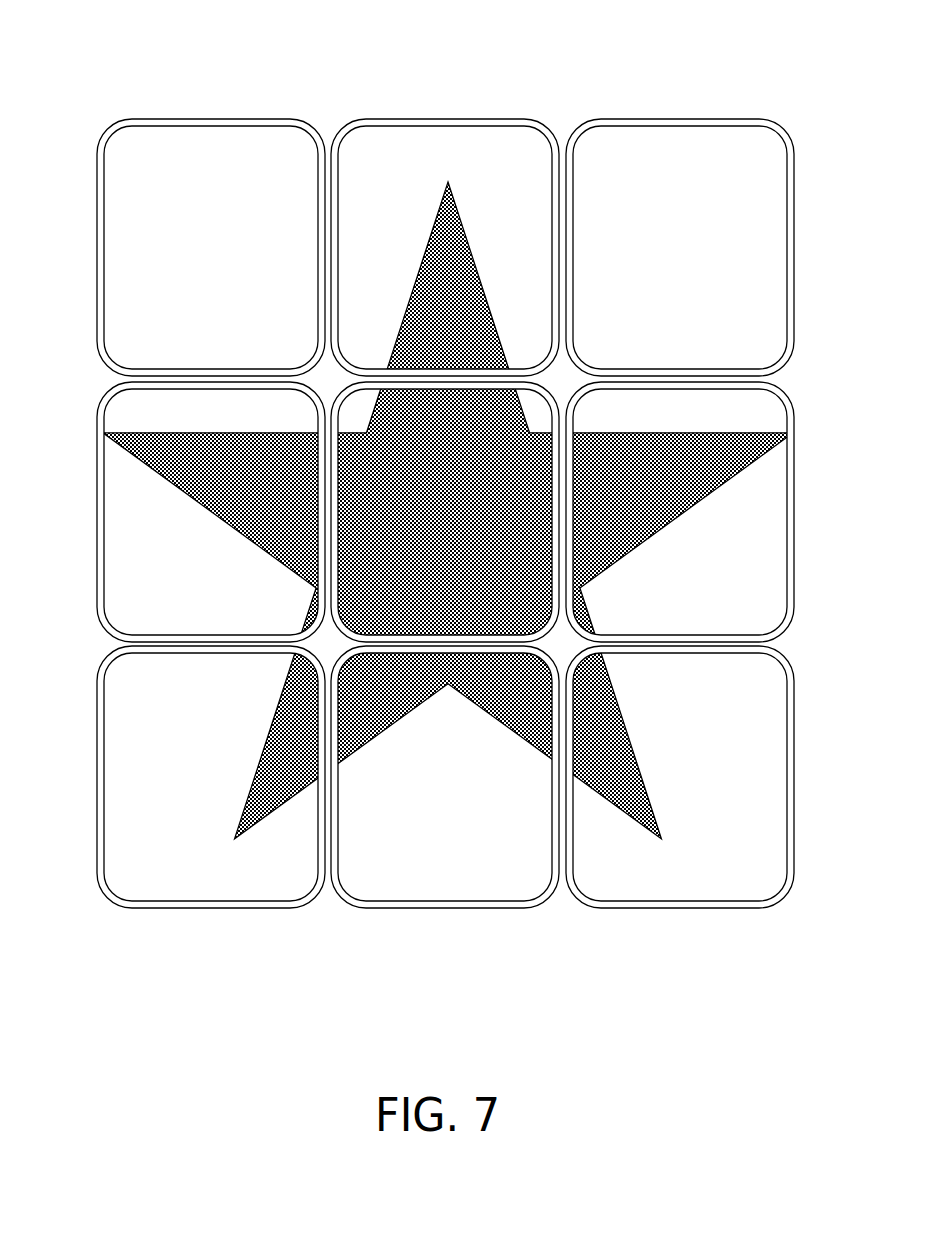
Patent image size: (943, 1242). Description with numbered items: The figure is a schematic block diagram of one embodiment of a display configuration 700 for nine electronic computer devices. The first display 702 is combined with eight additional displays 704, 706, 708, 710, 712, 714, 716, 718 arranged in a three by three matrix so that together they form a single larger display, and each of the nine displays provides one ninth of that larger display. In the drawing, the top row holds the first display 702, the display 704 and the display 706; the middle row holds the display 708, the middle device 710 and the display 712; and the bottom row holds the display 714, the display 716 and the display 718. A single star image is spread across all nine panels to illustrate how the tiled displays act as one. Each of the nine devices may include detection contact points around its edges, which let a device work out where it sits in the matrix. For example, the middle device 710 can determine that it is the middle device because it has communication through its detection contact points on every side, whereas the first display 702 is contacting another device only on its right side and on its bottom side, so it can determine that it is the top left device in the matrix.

The display configuration 700 is at (114, 66).
The first display 702 is at (215, 180).
The additional display 704 is at (510, 185).
The additional display 706 is at (722, 185).
The additional display 708 is at (143, 627).
The middle device 710 is at (443, 622).
The additional display 712 is at (653, 620).
The additional display 714 is at (143, 862).
The additional display 716 is at (442, 862).
The additional display 718 is at (653, 858).